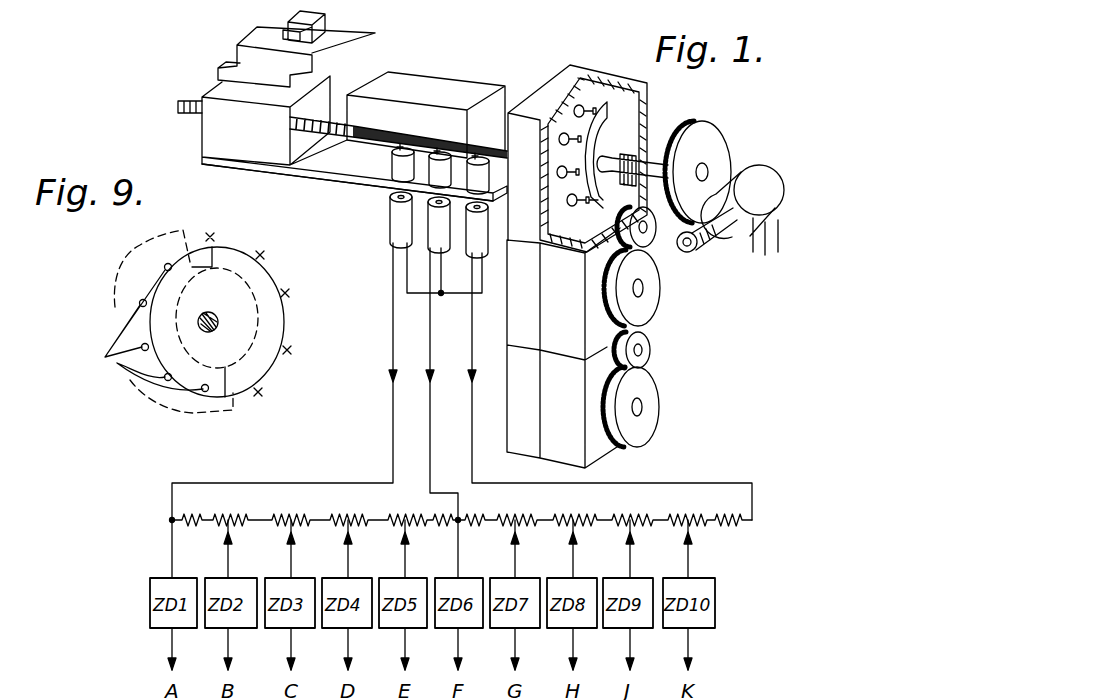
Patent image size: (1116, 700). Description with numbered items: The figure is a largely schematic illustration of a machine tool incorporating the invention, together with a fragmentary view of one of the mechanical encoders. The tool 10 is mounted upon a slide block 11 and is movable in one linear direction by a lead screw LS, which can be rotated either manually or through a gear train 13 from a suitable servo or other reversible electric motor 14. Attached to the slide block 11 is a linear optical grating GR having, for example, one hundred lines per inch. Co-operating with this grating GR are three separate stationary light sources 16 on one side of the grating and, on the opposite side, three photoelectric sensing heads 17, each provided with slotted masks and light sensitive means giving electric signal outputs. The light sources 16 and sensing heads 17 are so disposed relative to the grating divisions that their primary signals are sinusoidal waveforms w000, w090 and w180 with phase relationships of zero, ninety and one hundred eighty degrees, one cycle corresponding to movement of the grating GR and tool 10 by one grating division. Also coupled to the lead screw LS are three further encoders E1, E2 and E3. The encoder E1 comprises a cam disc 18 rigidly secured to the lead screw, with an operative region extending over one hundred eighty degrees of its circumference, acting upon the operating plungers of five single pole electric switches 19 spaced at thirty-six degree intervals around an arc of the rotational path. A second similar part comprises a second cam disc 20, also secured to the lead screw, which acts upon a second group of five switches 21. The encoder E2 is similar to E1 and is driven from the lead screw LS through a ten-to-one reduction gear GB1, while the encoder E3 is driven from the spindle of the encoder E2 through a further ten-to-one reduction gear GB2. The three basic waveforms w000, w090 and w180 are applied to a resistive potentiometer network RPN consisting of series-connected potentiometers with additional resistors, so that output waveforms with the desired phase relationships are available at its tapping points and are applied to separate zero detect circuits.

In FIG. 1, the tool 10 is at (333, 14).
In FIG. 1, the slide block 11 is at (253, 56).
In FIG. 1, the gear train 13 is at (689, 223).
In FIG. 1, the reversible electric motor 14 is at (751, 178).
In FIG. 1, the light sources 16 is at (470, 148).
In FIG. 1, the photoelectric sensing heads 17 is at (474, 231).
In FIG. 1, the cam disc 18 is at (617, 128).
In FIG. 9, the cam disc 18 is at (273, 323).
In FIG. 1, the single pole electric switches 19 is at (590, 208).
In FIG. 9, the single pole electric switches 19 is at (149, 328).
In FIG. 9, the second cam disc 20 is at (153, 246).
In FIG. 9, the second group of switches 21 is at (287, 292).
In FIG. 1, the lead screw LS is at (368, 128).
In FIG. 9, the lead screw LS is at (205, 332).
In FIG. 1, the linear optical grating GR is at (326, 168).
In FIG. 1, the encoder E1 is at (572, 77).
In FIG. 1, the encoder E2 is at (563, 348).
In FIG. 1, the encoder E3 is at (559, 413).
In FIG. 1, the reduction gear GB1 is at (655, 240).
In FIG. 1, the reduction gear GB2 is at (653, 354).
In FIG. 1, the resistive potentiometer network RPN is at (318, 512).
In FIG. 1, the basic waveform w000 is at (392, 300).
In FIG. 1, the basic waveform w090 is at (430, 432).
In FIG. 1, the basic waveform w180 is at (720, 472).